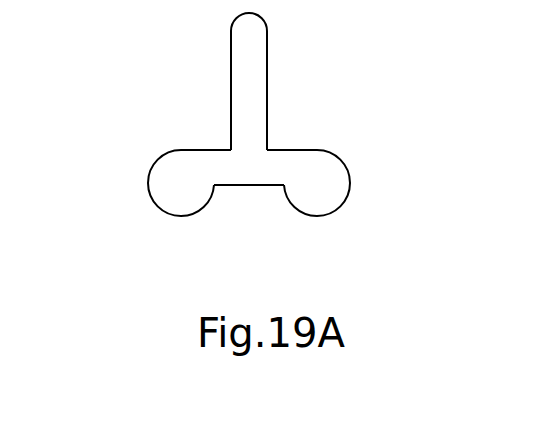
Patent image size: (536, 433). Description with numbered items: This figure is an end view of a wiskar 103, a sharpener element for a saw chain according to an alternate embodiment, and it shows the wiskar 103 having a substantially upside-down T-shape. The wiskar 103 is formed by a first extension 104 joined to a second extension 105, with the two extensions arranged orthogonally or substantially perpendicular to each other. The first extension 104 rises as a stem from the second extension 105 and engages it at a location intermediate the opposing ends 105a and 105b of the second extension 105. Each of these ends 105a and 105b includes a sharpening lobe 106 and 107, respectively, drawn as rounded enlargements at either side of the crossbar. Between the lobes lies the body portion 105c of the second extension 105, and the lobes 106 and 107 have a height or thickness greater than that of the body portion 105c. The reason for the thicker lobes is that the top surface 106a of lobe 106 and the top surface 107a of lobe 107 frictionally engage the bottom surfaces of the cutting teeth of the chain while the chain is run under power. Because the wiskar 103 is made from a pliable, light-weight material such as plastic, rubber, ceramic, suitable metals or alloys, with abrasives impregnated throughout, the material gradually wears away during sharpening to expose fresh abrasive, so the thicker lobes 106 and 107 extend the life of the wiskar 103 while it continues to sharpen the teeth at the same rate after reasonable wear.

The wiskar 103 is at (418, 102).
The first extension 104 is at (262, 53).
The second extension 105 is at (272, 184).
The end of second extension 105a is at (200, 198).
The end of second extension 105b is at (350, 192).
The body portion 105c is at (248, 190).
The sharpening lobe 106 is at (159, 141).
The top surface of lobe 106a is at (175, 150).
The sharpening lobe 107 is at (362, 155).
The top surface of lobe 107a is at (316, 152).